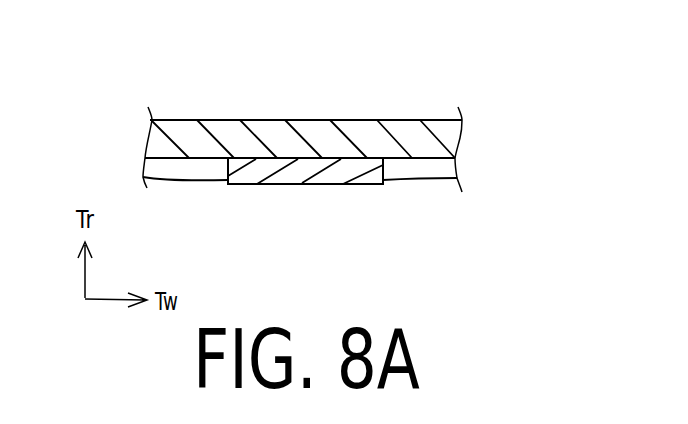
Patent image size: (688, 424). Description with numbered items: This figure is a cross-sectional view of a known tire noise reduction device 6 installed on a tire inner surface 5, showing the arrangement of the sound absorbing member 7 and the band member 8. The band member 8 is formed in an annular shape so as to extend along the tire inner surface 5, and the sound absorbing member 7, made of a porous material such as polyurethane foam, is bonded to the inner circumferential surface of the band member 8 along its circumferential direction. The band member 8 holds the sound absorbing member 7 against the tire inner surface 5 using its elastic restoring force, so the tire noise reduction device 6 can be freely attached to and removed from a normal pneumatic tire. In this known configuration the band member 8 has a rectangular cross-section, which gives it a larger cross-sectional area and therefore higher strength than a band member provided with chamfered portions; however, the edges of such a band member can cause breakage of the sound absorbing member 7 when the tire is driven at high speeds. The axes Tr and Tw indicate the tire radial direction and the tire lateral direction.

The tire inner surface 5 is at (397, 183).
The tire noise reduction device 6 is at (249, 111).
The sound absorbing member 7 is at (293, 142).
The band member 8 is at (300, 172).